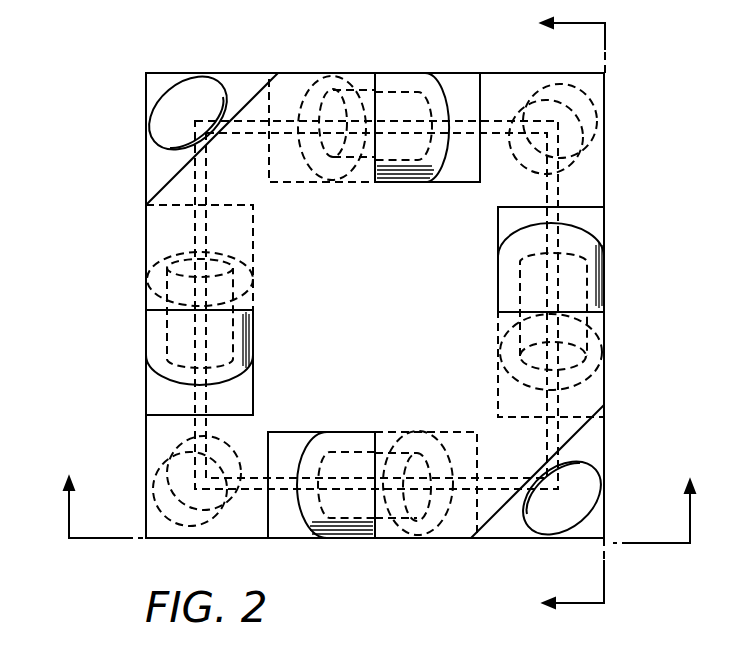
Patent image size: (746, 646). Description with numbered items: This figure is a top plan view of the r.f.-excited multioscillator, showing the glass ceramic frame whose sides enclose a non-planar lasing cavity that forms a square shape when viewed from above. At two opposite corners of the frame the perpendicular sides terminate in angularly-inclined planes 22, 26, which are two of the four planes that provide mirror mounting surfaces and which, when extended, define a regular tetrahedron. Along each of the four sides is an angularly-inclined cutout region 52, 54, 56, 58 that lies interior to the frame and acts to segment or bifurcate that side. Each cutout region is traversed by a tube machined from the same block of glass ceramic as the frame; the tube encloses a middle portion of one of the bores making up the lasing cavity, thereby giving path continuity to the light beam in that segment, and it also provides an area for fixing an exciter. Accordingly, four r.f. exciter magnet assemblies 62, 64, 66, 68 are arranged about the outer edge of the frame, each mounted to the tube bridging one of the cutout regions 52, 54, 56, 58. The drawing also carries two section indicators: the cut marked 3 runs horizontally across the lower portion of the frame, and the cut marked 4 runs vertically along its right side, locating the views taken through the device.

The angularly-inclined plane 22 is at (237, 83).
The angularly-inclined plane 26 is at (600, 442).
The cutout region 52 is at (146, 310).
The cutout region 54 is at (372, 529).
The cutout region 56 is at (615, 312).
The cutout region 58 is at (442, 72).
The r.f. exciter magnet assembly 62 is at (320, 541).
The r.f. exciter magnet assembly 64 is at (610, 283).
The r.f. exciter magnet assembly 66 is at (388, 82).
The r.f. exciter magnet assembly 68 is at (158, 333).
The section line 3- 3 is at (379, 510).
The section line 4- 4 is at (569, 321).